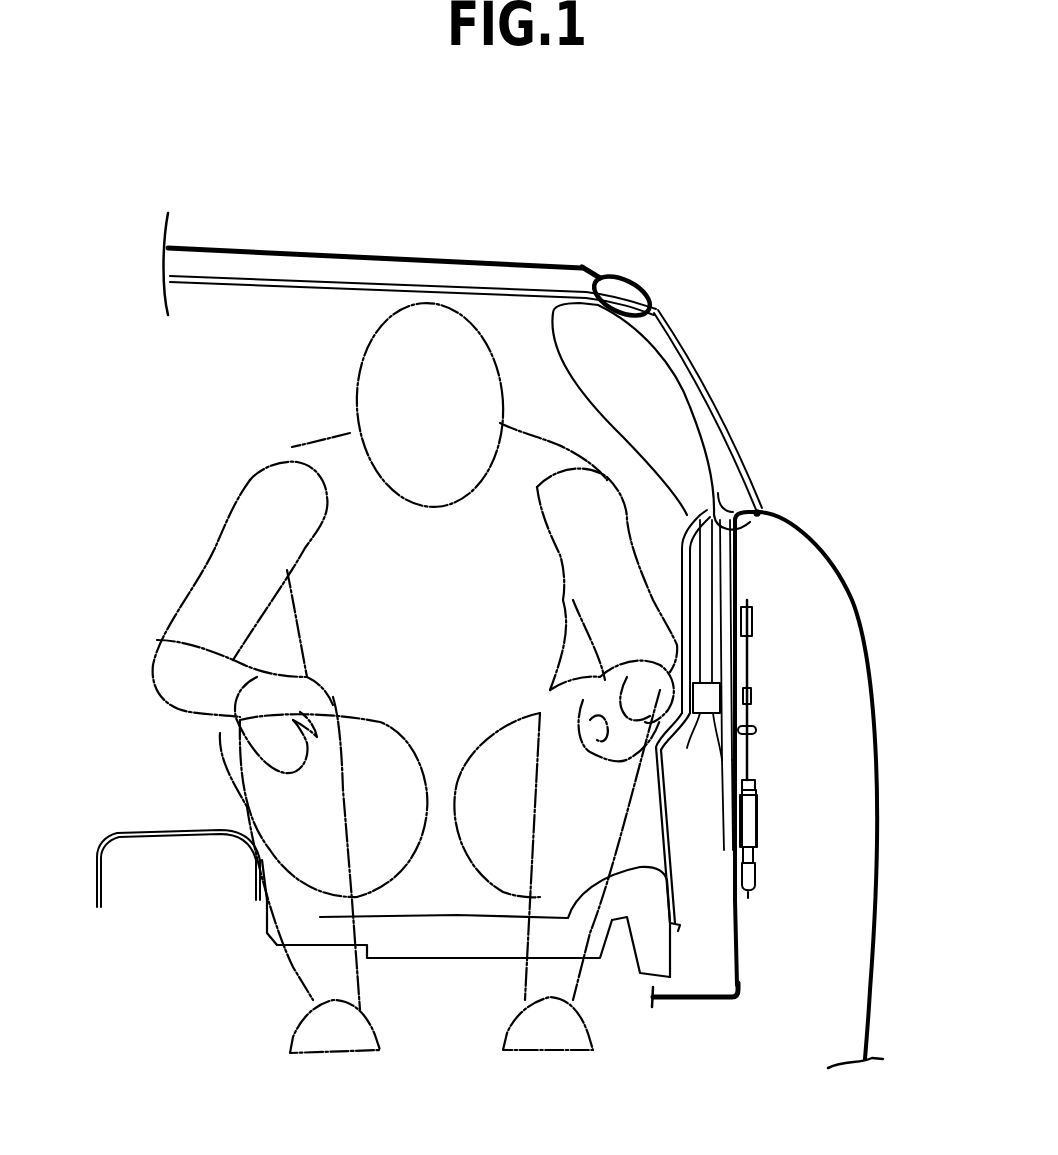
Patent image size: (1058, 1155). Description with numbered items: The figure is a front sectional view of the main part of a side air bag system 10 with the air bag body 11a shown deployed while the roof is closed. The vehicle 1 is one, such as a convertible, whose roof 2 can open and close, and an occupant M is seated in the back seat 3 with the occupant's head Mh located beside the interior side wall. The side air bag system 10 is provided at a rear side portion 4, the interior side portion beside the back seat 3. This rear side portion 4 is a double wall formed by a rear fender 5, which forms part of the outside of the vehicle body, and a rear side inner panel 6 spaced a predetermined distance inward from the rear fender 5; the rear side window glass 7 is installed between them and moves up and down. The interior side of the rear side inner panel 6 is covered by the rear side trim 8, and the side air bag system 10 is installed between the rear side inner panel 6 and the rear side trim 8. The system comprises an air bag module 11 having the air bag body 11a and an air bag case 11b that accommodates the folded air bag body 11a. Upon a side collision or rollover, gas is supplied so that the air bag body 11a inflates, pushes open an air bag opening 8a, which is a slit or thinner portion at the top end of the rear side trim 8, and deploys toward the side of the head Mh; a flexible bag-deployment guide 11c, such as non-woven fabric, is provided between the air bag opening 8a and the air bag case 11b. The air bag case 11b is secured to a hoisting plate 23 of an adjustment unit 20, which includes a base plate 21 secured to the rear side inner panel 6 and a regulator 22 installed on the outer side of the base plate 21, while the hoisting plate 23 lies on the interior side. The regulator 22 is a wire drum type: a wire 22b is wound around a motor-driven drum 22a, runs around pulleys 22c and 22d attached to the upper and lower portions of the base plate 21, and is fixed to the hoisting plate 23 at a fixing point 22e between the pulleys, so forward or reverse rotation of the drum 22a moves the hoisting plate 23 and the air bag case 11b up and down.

The vehicle 1 is at (758, 233).
The roof 2 is at (350, 256).
The back seat 3 is at (453, 947).
The rear side portion 4 is at (670, 567).
The rear fender 5 is at (880, 900).
The rear side inner panel 6 is at (740, 985).
The rear side window glass 7 is at (700, 367).
The rear side trim 8 is at (657, 823).
The air bag opening 8a is at (718, 493).
The side air bag system 10 is at (755, 590).
The air bag module 11 is at (712, 423).
The air bag body 11a is at (622, 380).
The air bag case 11b is at (691, 731).
The bag-deployment guide 11c is at (720, 613).
The adjustment unit 20 is at (760, 652).
The base plate 21 is at (740, 920).
The regulator 22 is at (768, 802).
The drum 22a is at (758, 826).
The wire 22b is at (752, 700).
The pulley 22c is at (751, 617).
The pulley 22d is at (757, 887).
The fixing point 22e is at (754, 731).
The hoisting plate 23 is at (712, 805).
The occupant M is at (335, 486).
The head of the occupant Mh is at (356, 370).